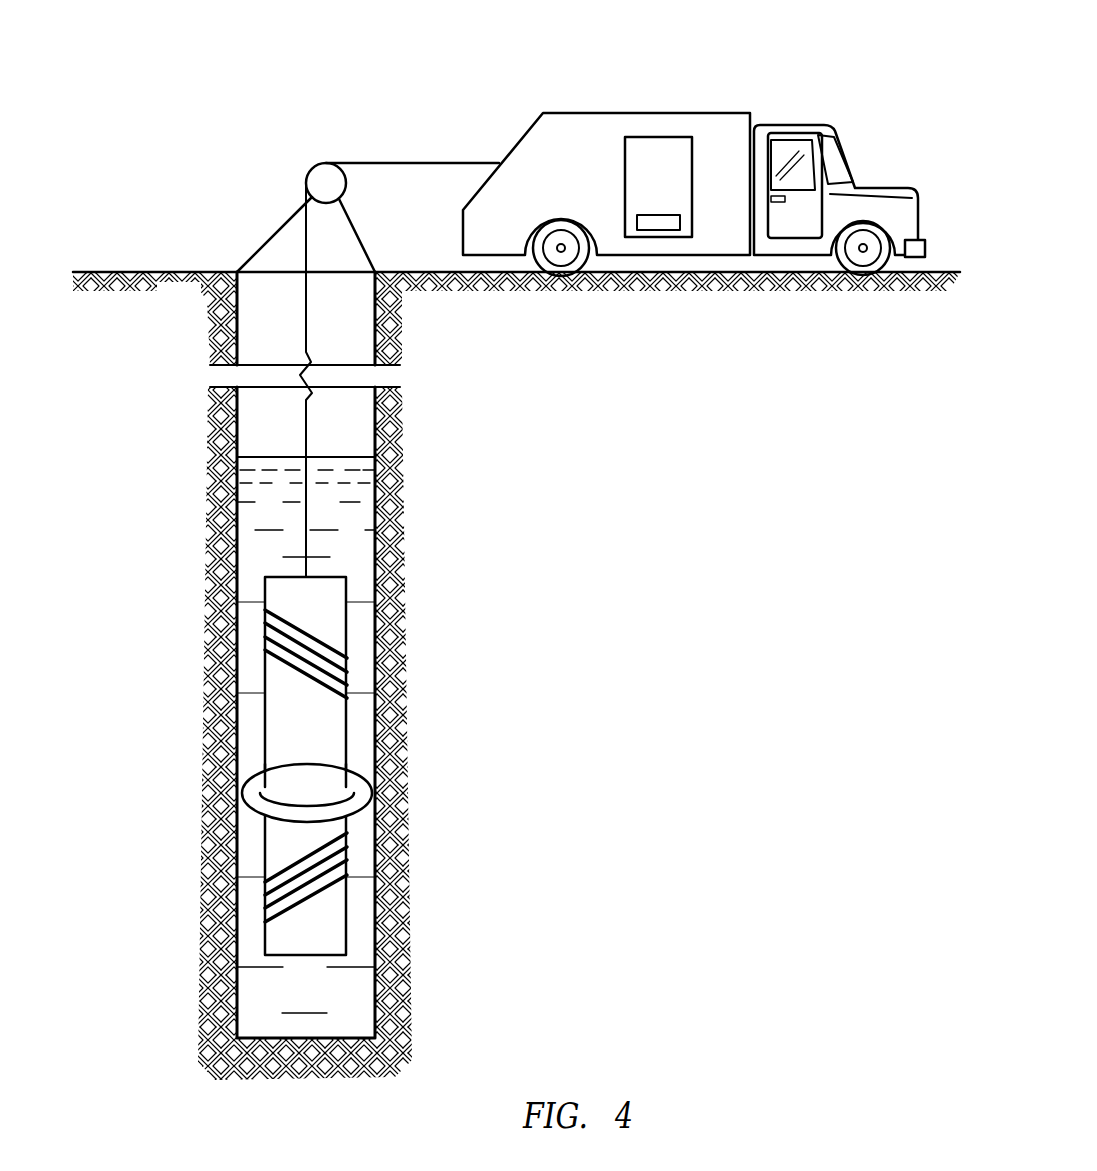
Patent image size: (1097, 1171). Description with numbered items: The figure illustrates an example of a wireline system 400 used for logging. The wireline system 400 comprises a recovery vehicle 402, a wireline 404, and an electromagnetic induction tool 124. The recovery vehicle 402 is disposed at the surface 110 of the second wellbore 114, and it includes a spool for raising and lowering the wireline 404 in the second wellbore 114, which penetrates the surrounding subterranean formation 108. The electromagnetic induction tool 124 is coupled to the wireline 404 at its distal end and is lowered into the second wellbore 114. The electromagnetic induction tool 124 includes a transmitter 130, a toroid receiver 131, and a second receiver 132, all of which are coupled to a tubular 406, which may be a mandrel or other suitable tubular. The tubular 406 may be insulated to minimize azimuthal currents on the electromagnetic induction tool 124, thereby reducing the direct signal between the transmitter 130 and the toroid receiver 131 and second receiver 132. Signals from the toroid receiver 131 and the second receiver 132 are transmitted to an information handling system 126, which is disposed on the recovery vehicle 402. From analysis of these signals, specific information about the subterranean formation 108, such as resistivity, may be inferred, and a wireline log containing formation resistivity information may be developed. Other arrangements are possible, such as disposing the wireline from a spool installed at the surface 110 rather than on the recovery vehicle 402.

The wireline system 400 is at (502, 543).
The recovery vehicle 402 is at (573, 112).
The wireline 404 is at (305, 230).
The information handling system 126 is at (677, 137).
The surface 110 is at (97, 268).
The subterranean formation 108 is at (196, 307).
The second wellbore 114 is at (378, 418).
The electromagnetic induction tool 124 is at (309, 766).
The tubular 406 is at (316, 729).
The transmitter 130 is at (330, 645).
The toroid receiver 131 is at (374, 803).
The second receiver 132 is at (320, 887).